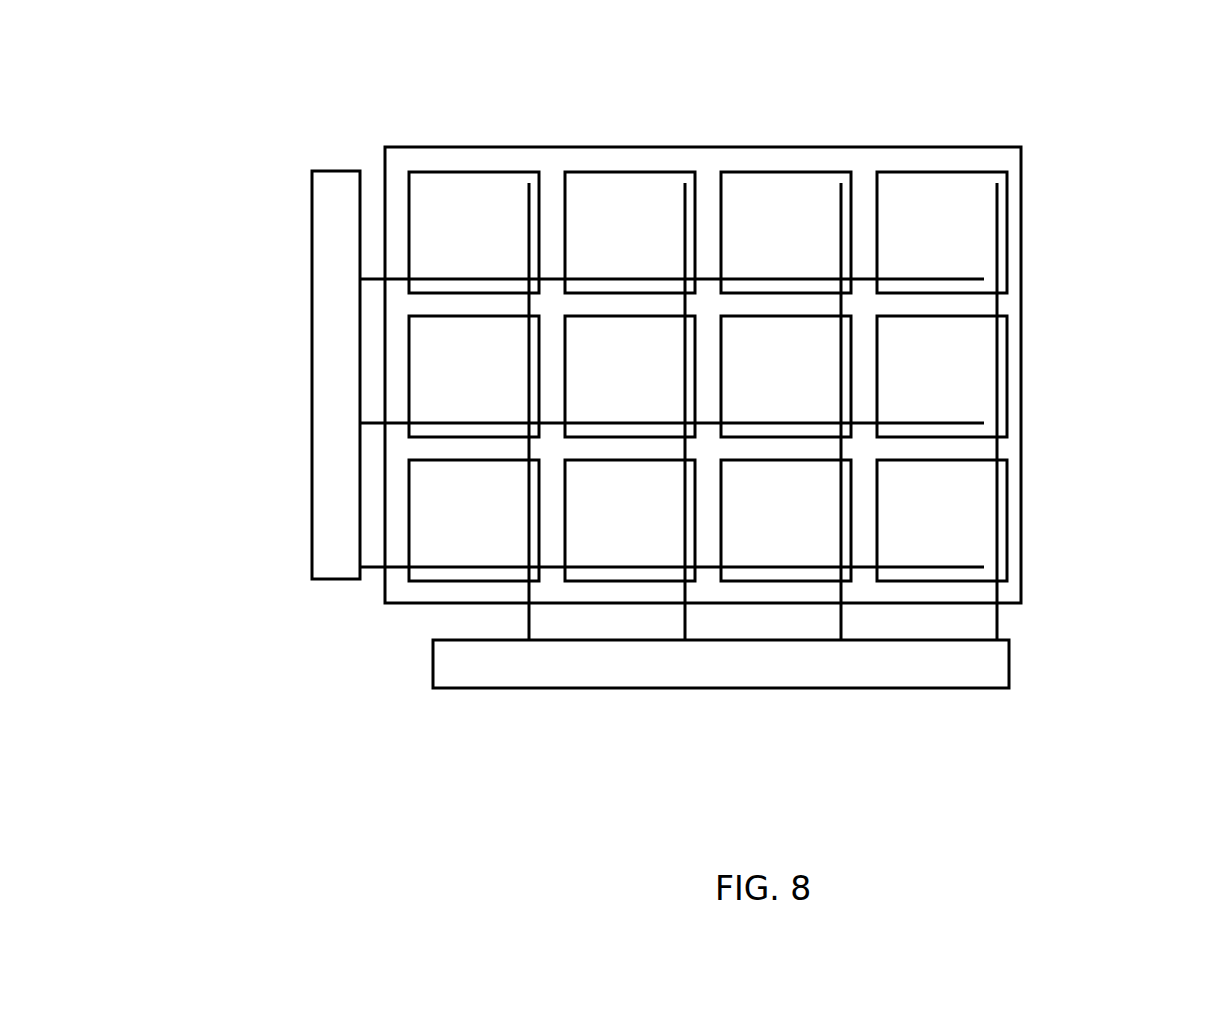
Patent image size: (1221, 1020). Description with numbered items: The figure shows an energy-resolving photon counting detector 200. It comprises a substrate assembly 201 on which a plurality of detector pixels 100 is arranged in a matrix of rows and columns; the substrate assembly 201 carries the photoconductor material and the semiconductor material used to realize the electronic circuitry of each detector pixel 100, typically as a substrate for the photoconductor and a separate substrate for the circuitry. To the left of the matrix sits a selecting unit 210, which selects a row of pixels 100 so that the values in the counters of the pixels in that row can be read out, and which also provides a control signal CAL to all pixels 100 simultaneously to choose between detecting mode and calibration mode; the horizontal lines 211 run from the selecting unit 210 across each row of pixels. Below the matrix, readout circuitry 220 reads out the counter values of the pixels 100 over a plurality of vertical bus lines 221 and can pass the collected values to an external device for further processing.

The energy-resolving photon counting detector 200 is at (302, 75).
The substrate assembly 201 is at (1021, 180).
The detector pixel 100 is at (973, 375).
The selecting unit 210 is at (312, 346).
The scan line 211 is at (445, 568).
The readout circuitry 220 is at (867, 688).
The bus line 221 is at (683, 213).